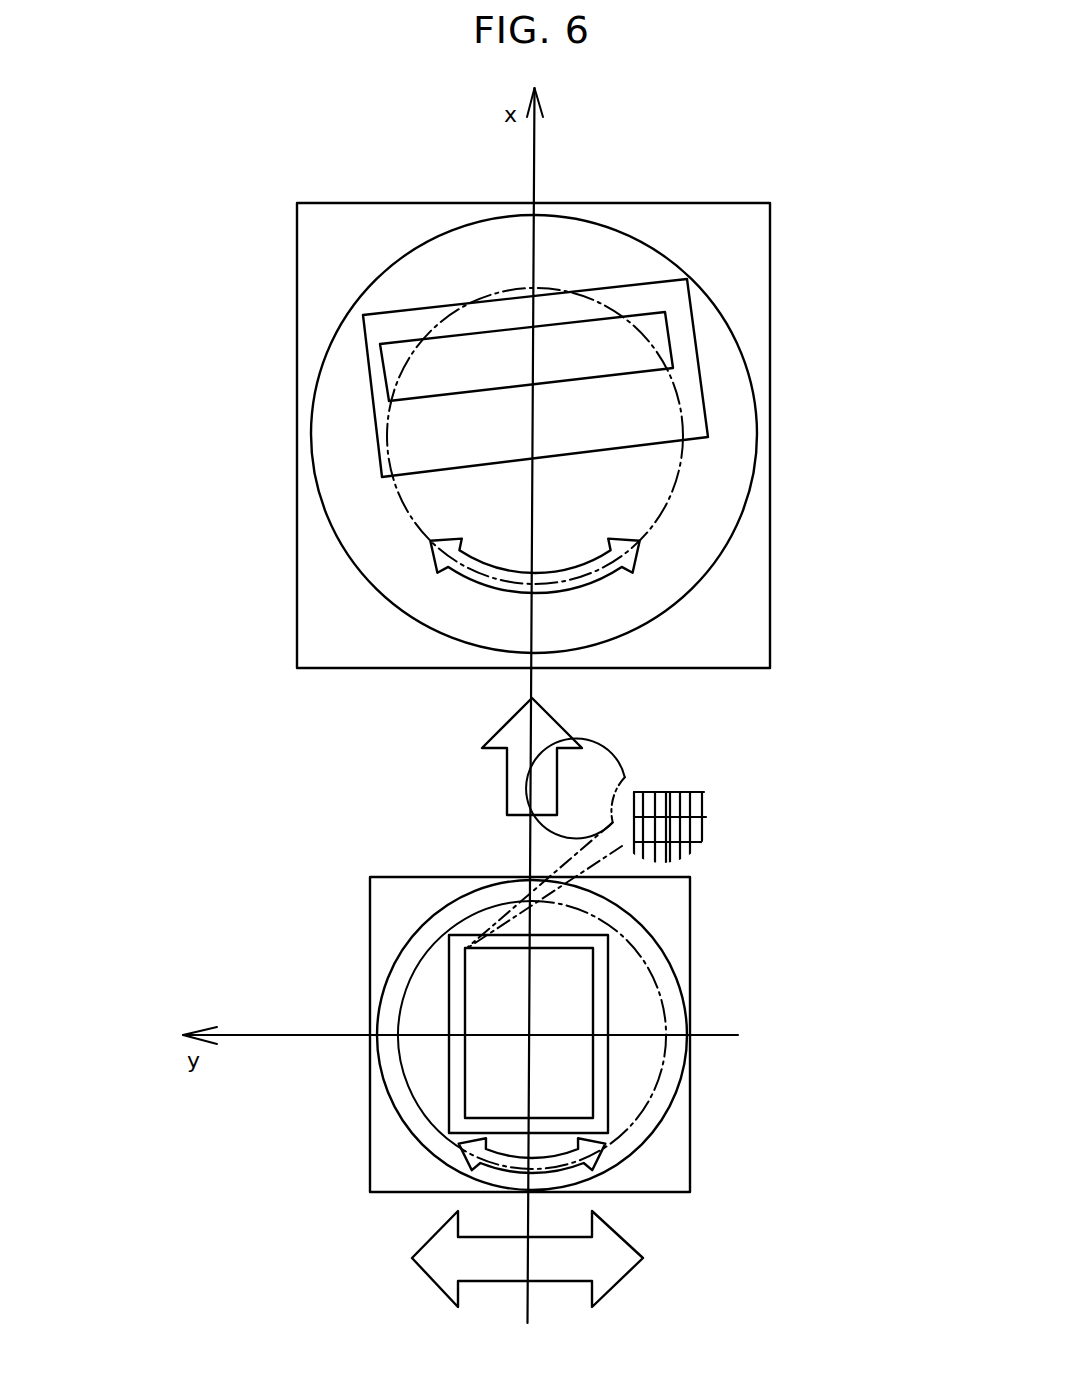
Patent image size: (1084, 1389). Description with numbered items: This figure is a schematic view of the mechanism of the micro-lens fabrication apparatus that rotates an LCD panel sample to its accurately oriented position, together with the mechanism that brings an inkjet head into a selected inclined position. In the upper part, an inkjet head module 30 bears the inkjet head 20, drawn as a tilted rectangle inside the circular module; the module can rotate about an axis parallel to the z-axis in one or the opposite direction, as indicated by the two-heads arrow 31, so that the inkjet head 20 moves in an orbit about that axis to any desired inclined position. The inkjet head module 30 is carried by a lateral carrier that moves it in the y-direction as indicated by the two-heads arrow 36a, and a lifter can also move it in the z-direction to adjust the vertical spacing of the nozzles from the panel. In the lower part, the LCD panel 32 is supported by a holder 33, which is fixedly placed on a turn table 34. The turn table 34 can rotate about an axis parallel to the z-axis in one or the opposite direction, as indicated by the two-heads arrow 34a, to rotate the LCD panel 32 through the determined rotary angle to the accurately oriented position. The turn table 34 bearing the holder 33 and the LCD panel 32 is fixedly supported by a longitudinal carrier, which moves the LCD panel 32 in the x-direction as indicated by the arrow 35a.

The inkjet head 20 is at (642, 318).
The inkjet head module 30 is at (633, 500).
The two-heads arrow 31 is at (583, 575).
The LCD panel 32 is at (577, 992).
The holder 33 is at (455, 983).
The turn table 34 is at (672, 1108).
The two-heads arrow 34a is at (573, 1165).
The arrow 35a is at (505, 781).
The two-heads arrow 36a is at (560, 1282).